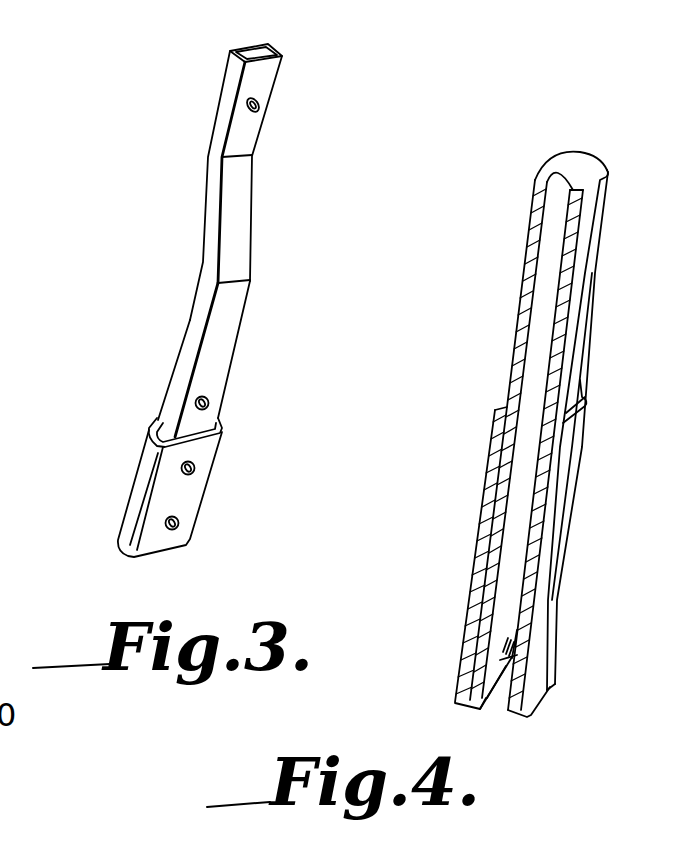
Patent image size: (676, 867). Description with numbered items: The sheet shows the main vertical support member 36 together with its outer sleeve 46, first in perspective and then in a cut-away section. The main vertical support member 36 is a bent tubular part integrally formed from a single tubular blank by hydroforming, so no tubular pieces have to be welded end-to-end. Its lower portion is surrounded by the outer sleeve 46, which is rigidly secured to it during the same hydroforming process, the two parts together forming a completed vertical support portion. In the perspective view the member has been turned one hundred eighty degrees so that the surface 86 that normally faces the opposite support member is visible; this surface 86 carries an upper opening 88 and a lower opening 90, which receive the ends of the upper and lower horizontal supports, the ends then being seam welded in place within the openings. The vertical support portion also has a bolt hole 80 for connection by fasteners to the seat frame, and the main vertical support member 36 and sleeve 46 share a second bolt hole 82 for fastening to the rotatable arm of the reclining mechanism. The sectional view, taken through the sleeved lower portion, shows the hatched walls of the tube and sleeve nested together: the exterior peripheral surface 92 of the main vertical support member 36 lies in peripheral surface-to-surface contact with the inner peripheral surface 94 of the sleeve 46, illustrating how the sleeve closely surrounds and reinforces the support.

In FIG. 3, the main vertical support member 36 is at (237, 247).
In FIG. 4, the main vertical support member 36 is at (523, 292).
In FIG. 3, the outer sleeve 46 is at (193, 503).
In FIG. 4, the outer sleeve 46 is at (482, 542).
In FIG. 3, the bolt hole 80 is at (180, 468).
In FIG. 3, the second bolt hole 82 is at (163, 525).
In FIG. 3, the surface 86 is at (218, 347).
In FIG. 3, the upper opening 88 is at (268, 113).
In FIG. 3, the lower opening 90 is at (195, 405).
In FIG. 4, the exterior peripheral surface 92 is at (567, 371).
In FIG. 4, the inner peripheral surface 94 is at (519, 558).